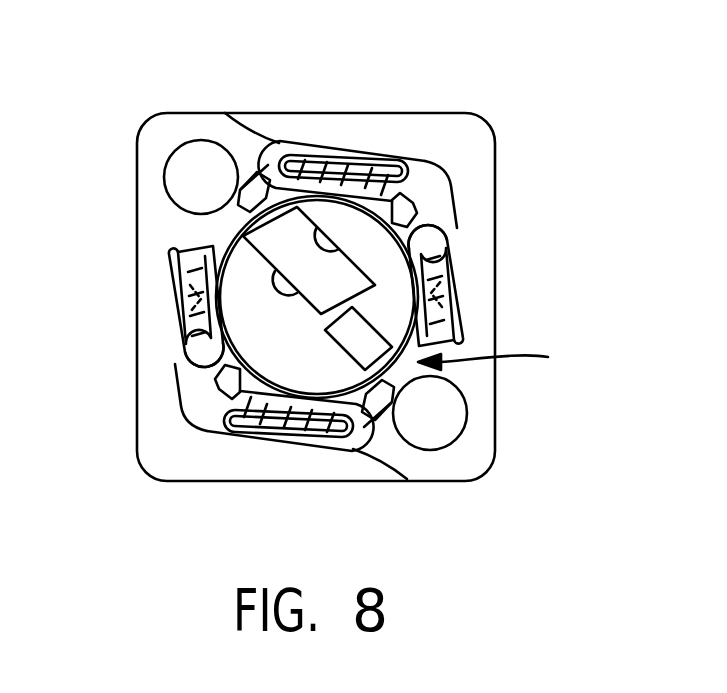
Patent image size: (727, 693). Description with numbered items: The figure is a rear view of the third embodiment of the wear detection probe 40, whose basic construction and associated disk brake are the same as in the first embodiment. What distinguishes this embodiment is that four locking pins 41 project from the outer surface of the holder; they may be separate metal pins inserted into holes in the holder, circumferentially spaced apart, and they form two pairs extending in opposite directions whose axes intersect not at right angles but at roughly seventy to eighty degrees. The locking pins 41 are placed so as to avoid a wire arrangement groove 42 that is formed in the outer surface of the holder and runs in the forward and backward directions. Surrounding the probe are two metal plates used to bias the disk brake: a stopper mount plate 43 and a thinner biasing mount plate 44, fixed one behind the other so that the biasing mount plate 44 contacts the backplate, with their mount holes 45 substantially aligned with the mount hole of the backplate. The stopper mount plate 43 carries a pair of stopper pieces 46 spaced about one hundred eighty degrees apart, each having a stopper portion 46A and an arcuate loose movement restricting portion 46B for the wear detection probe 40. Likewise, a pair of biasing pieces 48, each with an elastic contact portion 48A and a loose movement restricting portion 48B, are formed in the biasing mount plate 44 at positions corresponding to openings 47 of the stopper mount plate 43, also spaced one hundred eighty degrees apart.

The wear detection probe 40 is at (585, 369).
The locking pin 41 is at (172, 287).
The wire arrangement groove 42 is at (421, 239).
The stopper mount plate 43 is at (475, 137).
The biasing mount plate 44 is at (453, 183).
The mount hole 45 is at (228, 242).
The stopper piece 46 is at (329, 326).
The stopper portion 46A is at (184, 318).
The arcuate loose movement restricting portion 46B is at (177, 352).
The opening 47 is at (237, 126).
The biasing piece 48 is at (288, 274).
The elastic contact portion 48A is at (318, 160).
The loose movement restricting portion 48B is at (290, 145).